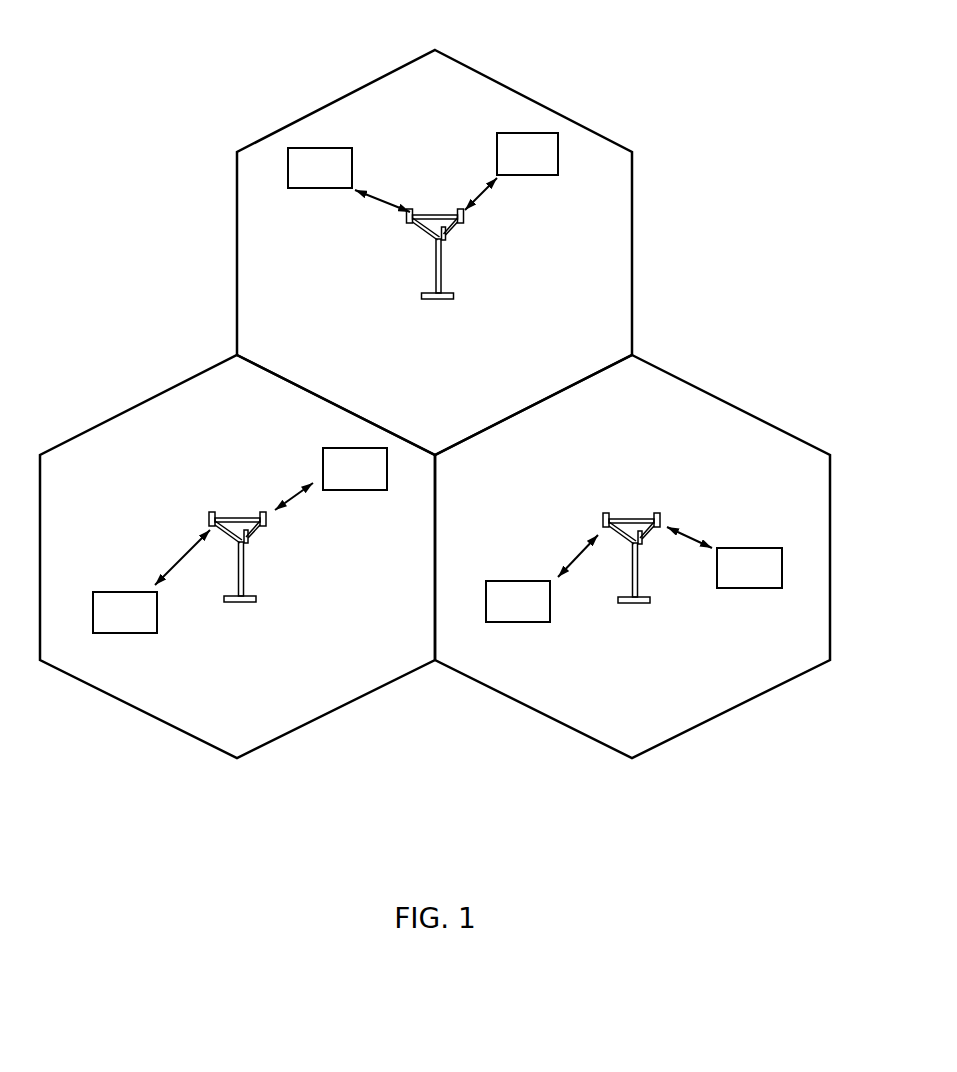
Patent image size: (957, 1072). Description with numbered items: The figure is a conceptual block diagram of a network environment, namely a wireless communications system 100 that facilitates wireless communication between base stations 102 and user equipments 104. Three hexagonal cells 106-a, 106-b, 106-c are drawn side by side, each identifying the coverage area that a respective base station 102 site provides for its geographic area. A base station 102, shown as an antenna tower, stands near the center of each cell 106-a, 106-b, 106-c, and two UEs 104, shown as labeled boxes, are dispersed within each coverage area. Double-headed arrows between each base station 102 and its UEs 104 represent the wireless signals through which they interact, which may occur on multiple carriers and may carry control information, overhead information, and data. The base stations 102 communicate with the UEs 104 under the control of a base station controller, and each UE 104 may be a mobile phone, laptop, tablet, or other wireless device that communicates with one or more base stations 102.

The wireless communications system 100 is at (768, 93).
The base station 102 is at (438, 214).
The user equipment (UE) 104 is at (310, 189).
The cell 106-a is at (120, 413).
The cell 106-b is at (518, 92).
The cell 106-c is at (730, 405).